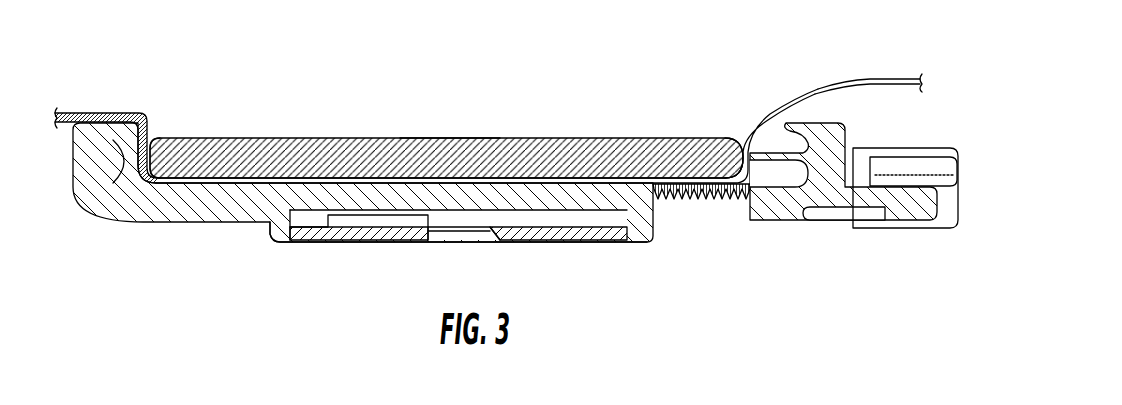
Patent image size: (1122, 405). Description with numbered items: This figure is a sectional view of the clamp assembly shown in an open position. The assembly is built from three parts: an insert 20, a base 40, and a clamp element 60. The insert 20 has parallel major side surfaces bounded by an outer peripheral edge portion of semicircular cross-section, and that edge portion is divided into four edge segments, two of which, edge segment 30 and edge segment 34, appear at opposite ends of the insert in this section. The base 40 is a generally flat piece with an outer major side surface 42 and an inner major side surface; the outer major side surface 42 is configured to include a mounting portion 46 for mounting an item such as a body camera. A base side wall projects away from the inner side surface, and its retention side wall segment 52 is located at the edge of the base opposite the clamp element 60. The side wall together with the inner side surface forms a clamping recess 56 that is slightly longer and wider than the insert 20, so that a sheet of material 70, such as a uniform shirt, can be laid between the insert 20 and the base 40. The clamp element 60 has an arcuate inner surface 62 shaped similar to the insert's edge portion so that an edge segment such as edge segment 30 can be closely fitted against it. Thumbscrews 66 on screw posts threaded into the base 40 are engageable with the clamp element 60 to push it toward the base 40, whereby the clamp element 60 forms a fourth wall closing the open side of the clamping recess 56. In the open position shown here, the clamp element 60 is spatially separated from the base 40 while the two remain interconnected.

The insert 20 is at (335, 126).
The edge segment 30 is at (741, 152).
The edge segment 34 is at (140, 155).
The base 40 is at (137, 226).
The outer major side surface 42 is at (210, 222).
The mounting portion 46 is at (353, 243).
The retention side wall segment 52 is at (100, 123).
The clamping recess 56 is at (438, 150).
The clamp element 60 is at (766, 232).
The inner surface 62 is at (753, 127).
The thumbscrews 66 is at (913, 167).
The sheet of material 70 is at (865, 68).